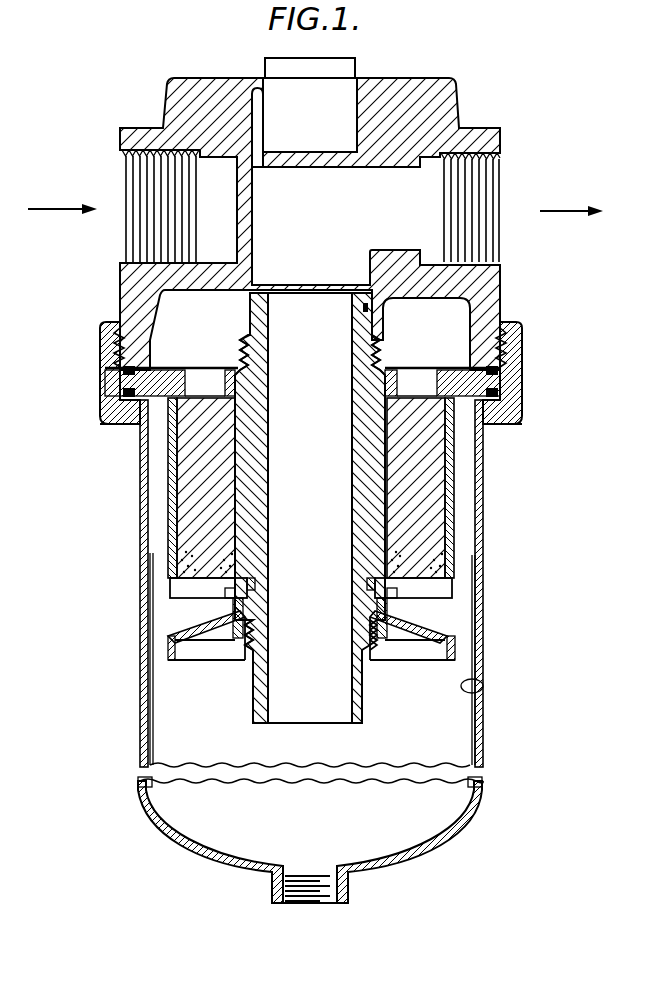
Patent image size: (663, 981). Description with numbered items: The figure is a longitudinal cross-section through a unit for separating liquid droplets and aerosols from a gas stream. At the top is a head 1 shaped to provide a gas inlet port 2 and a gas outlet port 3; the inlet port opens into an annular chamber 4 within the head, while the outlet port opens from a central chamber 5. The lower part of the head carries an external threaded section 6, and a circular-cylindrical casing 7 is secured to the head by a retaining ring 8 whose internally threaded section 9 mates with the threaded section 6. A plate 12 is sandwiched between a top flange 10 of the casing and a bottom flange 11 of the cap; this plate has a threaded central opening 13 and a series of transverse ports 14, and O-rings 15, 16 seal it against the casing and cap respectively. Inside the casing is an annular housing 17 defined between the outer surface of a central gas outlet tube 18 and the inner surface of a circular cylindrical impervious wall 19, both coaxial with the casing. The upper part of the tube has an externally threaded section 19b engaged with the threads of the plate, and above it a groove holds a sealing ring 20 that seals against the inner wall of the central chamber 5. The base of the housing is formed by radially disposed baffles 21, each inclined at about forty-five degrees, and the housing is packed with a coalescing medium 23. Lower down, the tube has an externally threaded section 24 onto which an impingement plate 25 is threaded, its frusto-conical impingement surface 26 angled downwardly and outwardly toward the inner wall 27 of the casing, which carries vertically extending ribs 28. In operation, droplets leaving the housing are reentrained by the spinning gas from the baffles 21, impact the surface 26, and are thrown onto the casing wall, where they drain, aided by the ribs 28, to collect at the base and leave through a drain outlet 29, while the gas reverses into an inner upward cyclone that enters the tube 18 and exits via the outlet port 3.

The head 1 is at (370, 74).
The gas inlet port 2 is at (137, 158).
The gas outlet port 3 is at (490, 168).
The annular chamber 4 is at (155, 317).
The central chamber 5 is at (253, 222).
The external threaded section 6 is at (103, 332).
The casing 7 is at (480, 488).
The retaining ring 8 is at (103, 415).
The internally threaded section 9 is at (520, 335).
The top flange 10 is at (122, 396).
The bottom flange 11 is at (118, 355).
The plate 12 is at (455, 372).
The threaded central opening 13 is at (373, 383).
The transverse ports 14 is at (190, 378).
The O-ring 15 is at (520, 415).
The O-ring 16 is at (505, 390).
The housing 17 is at (168, 523).
The central gas outlet tube 18 is at (257, 490).
The circular cylindrical impervious wall 19 is at (170, 483).
The externally threaded section 19b is at (247, 355).
The sealing ring 20 is at (362, 311).
The baffles 21 is at (180, 585).
The coalescing medium 23 is at (422, 555).
The externally threaded section 24 is at (247, 638).
The impingement plate 25 is at (450, 643).
The frusto-conical impingement surface 26 is at (427, 620).
The inner wall 27 is at (483, 689).
The ribs 28 is at (153, 740).
The drain outlet 29 is at (323, 893).